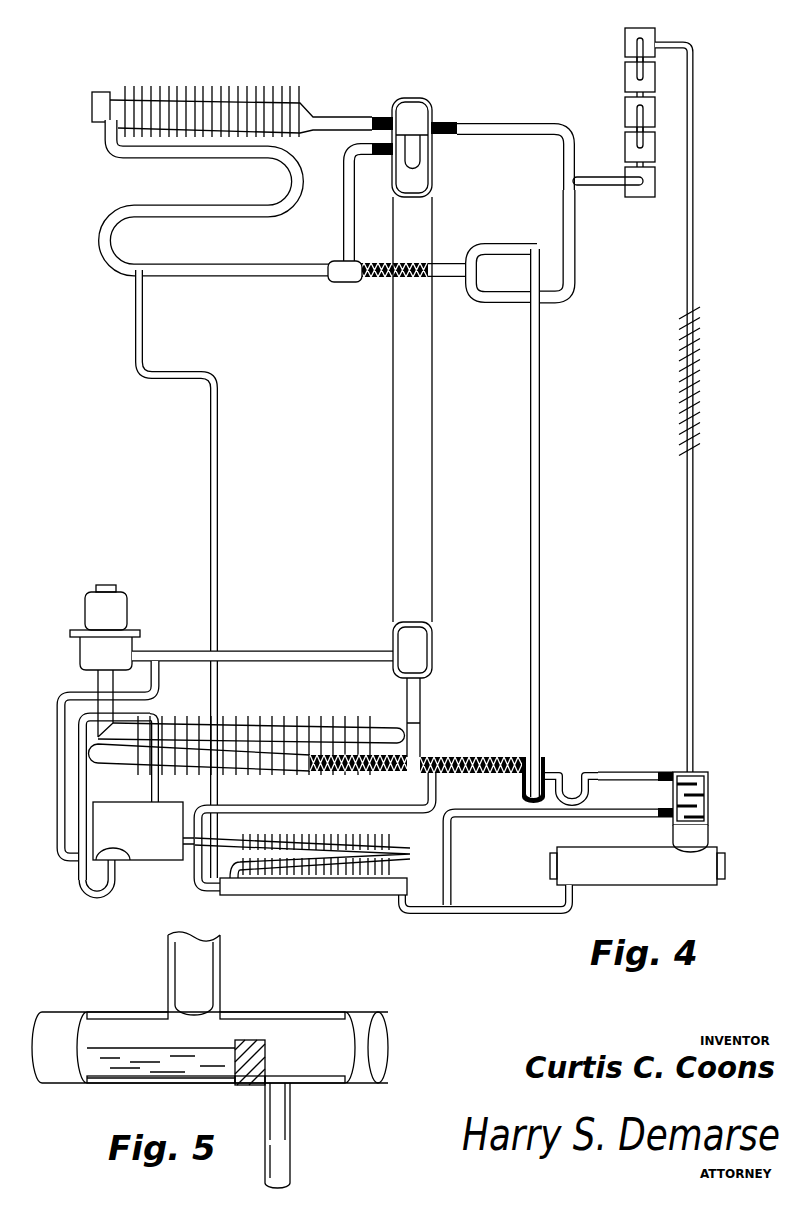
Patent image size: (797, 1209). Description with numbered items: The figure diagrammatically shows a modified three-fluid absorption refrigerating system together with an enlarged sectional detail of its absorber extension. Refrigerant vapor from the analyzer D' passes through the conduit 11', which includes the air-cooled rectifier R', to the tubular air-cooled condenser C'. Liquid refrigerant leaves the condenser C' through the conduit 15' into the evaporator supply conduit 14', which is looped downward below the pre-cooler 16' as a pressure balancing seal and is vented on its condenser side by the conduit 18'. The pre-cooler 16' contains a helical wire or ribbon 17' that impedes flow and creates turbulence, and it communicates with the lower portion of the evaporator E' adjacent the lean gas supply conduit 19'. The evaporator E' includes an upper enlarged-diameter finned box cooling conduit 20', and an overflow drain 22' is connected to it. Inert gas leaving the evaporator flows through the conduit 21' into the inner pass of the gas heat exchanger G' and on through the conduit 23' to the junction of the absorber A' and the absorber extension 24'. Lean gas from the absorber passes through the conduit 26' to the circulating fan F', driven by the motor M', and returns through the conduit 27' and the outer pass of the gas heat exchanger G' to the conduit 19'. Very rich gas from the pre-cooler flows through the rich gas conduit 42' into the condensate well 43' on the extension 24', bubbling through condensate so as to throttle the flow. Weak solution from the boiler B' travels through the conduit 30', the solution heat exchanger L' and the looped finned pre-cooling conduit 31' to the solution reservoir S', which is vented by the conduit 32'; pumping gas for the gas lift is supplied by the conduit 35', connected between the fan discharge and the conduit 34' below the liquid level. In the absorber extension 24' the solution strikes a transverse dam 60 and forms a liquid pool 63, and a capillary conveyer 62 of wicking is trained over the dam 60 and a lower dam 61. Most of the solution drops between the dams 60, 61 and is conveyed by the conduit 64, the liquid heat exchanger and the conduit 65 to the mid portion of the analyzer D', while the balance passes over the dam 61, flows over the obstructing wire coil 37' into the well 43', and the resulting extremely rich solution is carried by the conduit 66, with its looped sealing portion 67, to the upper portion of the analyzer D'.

In FIG. 4, the finned box cooling conduit 20' is at (232, 106).
In FIG. 4, the conduit 21' is at (397, 139).
In FIG. 4, the vent conduit 18' is at (513, 144).
In FIG. 4, the evaporator supply conduit 14' is at (575, 243).
In FIG. 4, the conduit 15' is at (608, 168).
In FIG. 4, the pre-cooler conduit 16' is at (487, 266).
In FIG. 4, the helical wire or ribbon 17' is at (413, 284).
In FIG. 4, the lean gas supply conduit 19' is at (360, 215).
In FIG. 4, the rich gas conduit 42' is at (560, 523).
In FIG. 4, the conduit 11' is at (699, 408).
In FIG. 4, the overflow drain 22' is at (199, 574).
In FIG. 4, the conduit 23' is at (428, 662).
In FIG. 5, the conduit 23' is at (214, 973).
In FIG. 4, the absorber extension 24' is at (449, 717).
In FIG. 5, the absorber extension 24' is at (283, 1002).
In FIG. 4, the conduit 26' is at (77, 703).
In FIG. 4, the discharge conduit 27' is at (262, 640).
In FIG. 4, the conduit 30' is at (485, 897).
In FIG. 4, the looped finned pre-cooling conduit 31' is at (309, 849).
In FIG. 4, the vent conduit 32' is at (138, 760).
In FIG. 4, the conduit 34' is at (117, 806).
In FIG. 4, the pumping gas conduit 35' is at (87, 759).
In FIG. 4, the obstructing wire coil 37' is at (416, 780).
In FIG. 4, the condensate well 43' is at (518, 782).
In FIG. 5, the transverse dam 60 is at (235, 1087).
In FIG. 5, the lower dam 61 is at (312, 1086).
In FIG. 5, the capillary conveyer 62 is at (288, 1059).
In FIG. 5, the liquid pool 63 is at (161, 1063).
In FIG. 4, the conduit 64 is at (372, 807).
In FIG. 5, the conduit 64 is at (291, 1150).
In FIG. 4, the conduit 65 is at (625, 812).
In FIG. 4, the conduit 66 is at (622, 773).
In FIG. 4, the looped sealing portion 67 is at (587, 793).
In FIG. 4, the absorber A' is at (247, 728).
In FIG. 5, the absorber A' is at (210, 1032).
In FIG. 4, the boiler B' is at (637, 866).
In FIG. 4, the condenser C' is at (619, 112).
In FIG. 4, the analyzer D' is at (717, 812).
In FIG. 4, the evaporator E' is at (216, 195).
In FIG. 4, the circulating fan F' is at (105, 650).
In FIG. 4, the gas heat exchanger G' is at (394, 409).
In FIG. 4, the solution heat exchanger L' is at (313, 902).
In FIG. 4, the electrical motor M' is at (106, 607).
In FIG. 4, the rectifier R' is at (670, 381).
In FIG. 4, the solution reservoir S' is at (144, 831).